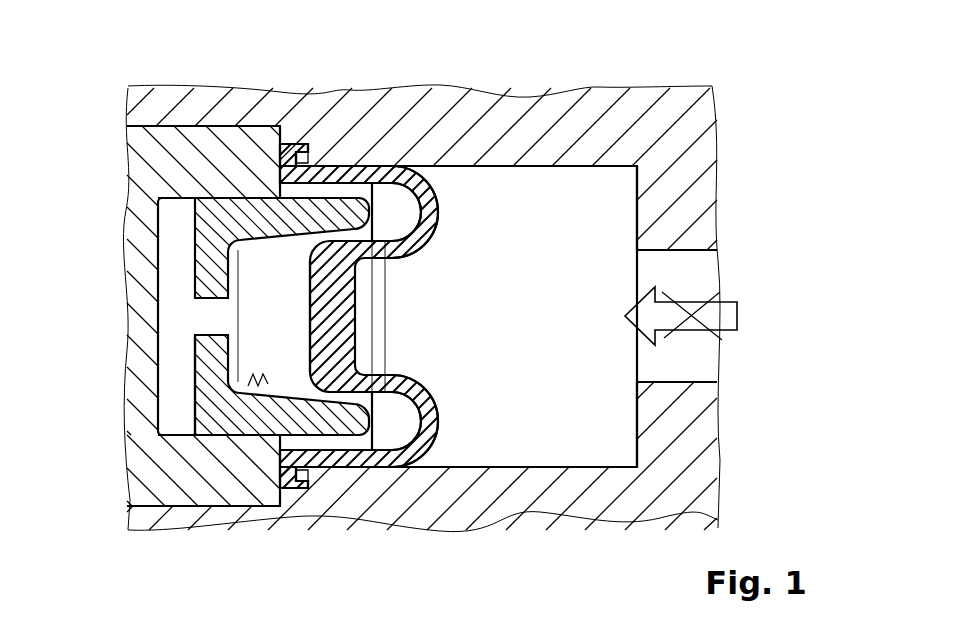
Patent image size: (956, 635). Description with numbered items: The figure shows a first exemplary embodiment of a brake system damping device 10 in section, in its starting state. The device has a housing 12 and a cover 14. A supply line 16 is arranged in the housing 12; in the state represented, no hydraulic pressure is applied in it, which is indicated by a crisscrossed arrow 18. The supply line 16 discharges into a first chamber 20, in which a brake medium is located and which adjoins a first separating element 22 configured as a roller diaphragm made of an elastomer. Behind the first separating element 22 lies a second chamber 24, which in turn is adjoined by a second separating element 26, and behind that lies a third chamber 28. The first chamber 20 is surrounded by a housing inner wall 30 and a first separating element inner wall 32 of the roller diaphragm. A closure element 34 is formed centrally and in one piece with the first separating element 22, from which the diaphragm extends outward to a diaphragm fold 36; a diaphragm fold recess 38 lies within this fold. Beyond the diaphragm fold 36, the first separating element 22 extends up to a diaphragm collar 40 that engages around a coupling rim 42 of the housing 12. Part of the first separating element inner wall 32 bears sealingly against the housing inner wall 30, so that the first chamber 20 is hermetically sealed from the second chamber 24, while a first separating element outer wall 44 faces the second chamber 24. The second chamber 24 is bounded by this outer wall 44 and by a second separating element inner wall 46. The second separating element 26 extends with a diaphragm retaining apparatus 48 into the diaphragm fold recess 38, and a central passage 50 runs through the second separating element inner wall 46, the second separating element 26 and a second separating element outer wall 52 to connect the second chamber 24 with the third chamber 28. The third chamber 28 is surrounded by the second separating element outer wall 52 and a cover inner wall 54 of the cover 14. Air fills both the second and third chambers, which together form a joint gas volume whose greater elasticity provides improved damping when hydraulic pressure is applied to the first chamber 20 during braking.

The brake system damping device 10 is at (745, 83).
The housing 12 is at (685, 133).
The cover 14 is at (140, 320).
The supply line 16 is at (712, 270).
The crisscrossed arrow 18 is at (740, 318).
The first chamber 20 is at (613, 437).
The first separating element 22 is at (340, 166).
The second chamber 24 is at (200, 296).
The second separating element 26 is at (207, 217).
The third chamber 28 is at (177, 258).
The housing inner wall 30 is at (595, 168).
The first separating element inner wall 32 is at (357, 302).
The closure element 34 is at (357, 345).
The diaphragm fold 36 is at (438, 213).
The diaphragm fold recess 38 is at (418, 236).
The diaphragm collar 40 is at (296, 152).
The coupling rim 42 is at (307, 156).
The first separating element outer wall 44 is at (310, 312).
The second separating element inner wall 46 is at (256, 392).
The diaphragm retaining apparatus 48 is at (372, 172).
The passage 50 is at (205, 322).
The second separating element outer wall 52 is at (193, 397).
The cover inner wall 54 is at (178, 414).